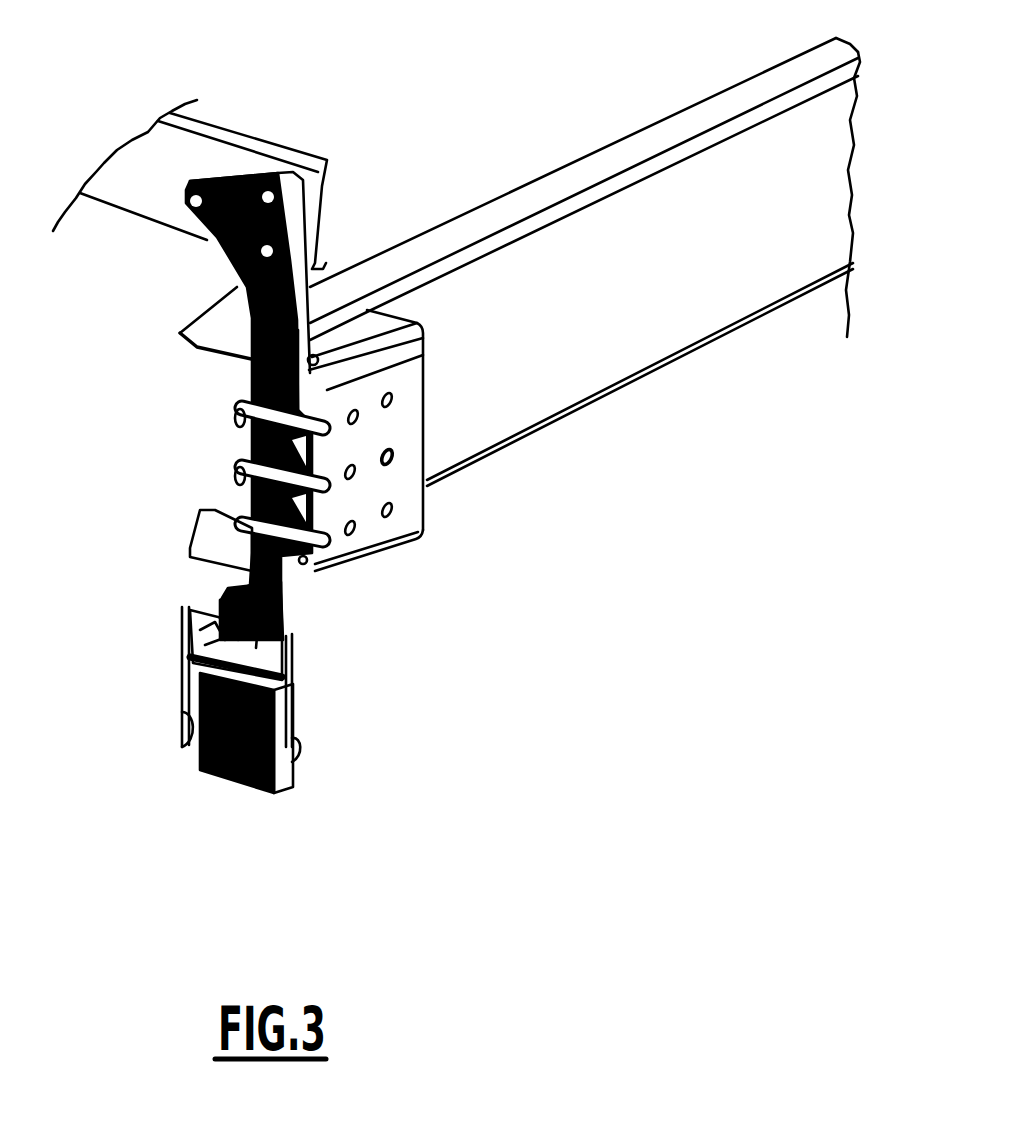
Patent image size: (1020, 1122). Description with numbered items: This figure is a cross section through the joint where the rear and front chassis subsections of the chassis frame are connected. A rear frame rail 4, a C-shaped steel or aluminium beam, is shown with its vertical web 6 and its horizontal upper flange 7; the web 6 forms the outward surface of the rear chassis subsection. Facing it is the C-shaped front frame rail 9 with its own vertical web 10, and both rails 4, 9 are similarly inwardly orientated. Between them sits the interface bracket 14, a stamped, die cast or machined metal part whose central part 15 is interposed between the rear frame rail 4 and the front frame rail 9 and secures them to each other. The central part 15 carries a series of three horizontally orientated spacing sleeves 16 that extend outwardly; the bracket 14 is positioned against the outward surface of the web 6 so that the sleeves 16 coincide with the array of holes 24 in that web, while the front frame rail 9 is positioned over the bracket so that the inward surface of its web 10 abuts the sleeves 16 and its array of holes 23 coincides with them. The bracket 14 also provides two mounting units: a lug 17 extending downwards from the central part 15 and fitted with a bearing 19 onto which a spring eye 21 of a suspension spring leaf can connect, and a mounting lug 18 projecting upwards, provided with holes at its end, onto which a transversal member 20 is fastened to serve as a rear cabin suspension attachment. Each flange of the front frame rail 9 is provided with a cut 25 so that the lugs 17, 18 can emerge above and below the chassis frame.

The rear frame rail 4 is at (860, 237).
The vertical web 6 is at (707, 277).
The upper flange 7 is at (690, 126).
The front frame rail 9 is at (403, 513).
The vertical web 10 is at (427, 383).
The interface bracket 14 is at (237, 455).
The central part 15 is at (240, 397).
The spacing sleeves 16 is at (320, 476).
The lug 17 is at (222, 596).
The mounting lug 18 is at (228, 305).
The bearing 19 is at (180, 670).
The transversal member 20 is at (222, 137).
The spring eye 21 is at (220, 788).
The array of holes 23 is at (213, 513).
The array of holes 24 is at (392, 457).
The cut 25 is at (313, 357).